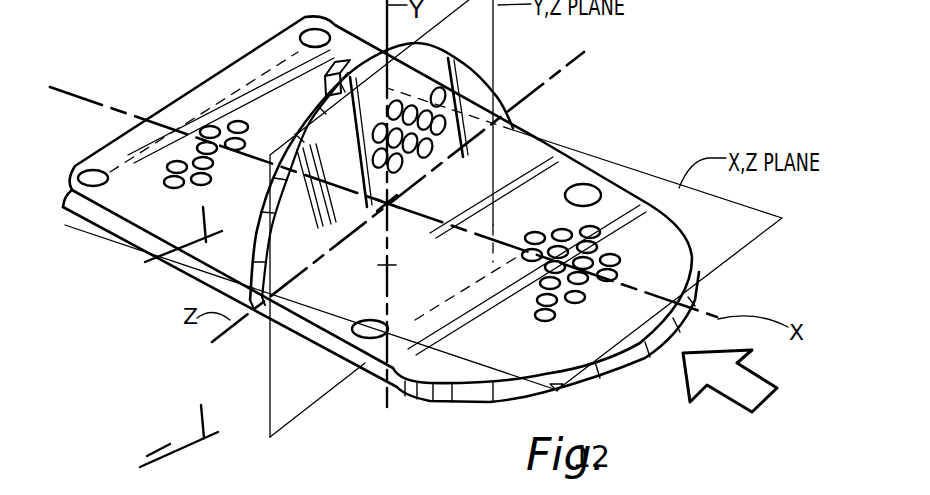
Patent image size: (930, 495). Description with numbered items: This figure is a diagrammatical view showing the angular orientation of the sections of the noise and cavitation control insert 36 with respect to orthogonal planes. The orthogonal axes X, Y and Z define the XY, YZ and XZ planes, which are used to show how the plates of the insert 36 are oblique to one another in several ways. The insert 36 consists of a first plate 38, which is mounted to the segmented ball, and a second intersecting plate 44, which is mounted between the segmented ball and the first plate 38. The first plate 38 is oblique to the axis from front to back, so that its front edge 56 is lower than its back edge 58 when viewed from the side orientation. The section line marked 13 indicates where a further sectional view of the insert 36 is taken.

The section line 13- 13 is at (181, 342).
The arcuate support member 36 is at (472, 49).
The base plate 38 is at (650, 271).
The perforated panel 44 is at (469, 77).
The peripheral rim edge 56 is at (678, 296).
The plate edge rail 58 is at (186, 101).